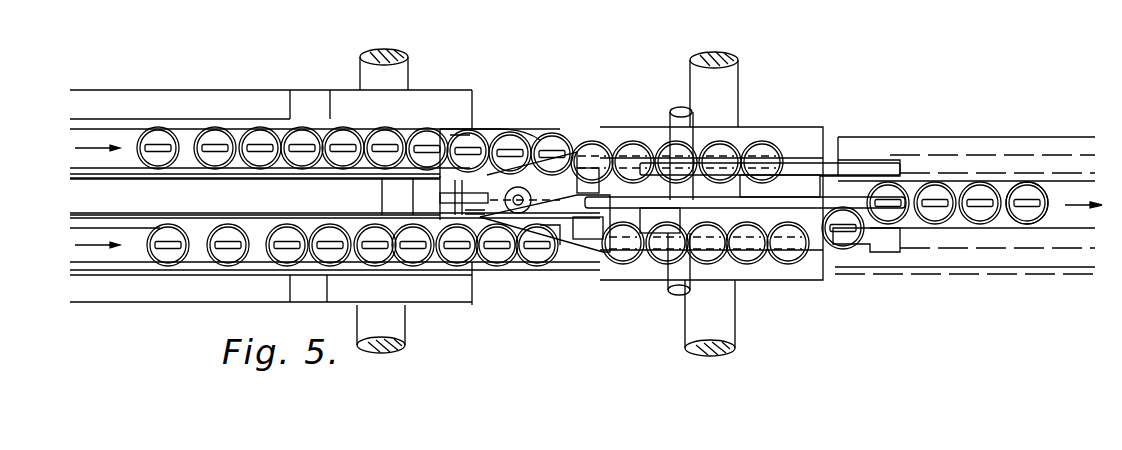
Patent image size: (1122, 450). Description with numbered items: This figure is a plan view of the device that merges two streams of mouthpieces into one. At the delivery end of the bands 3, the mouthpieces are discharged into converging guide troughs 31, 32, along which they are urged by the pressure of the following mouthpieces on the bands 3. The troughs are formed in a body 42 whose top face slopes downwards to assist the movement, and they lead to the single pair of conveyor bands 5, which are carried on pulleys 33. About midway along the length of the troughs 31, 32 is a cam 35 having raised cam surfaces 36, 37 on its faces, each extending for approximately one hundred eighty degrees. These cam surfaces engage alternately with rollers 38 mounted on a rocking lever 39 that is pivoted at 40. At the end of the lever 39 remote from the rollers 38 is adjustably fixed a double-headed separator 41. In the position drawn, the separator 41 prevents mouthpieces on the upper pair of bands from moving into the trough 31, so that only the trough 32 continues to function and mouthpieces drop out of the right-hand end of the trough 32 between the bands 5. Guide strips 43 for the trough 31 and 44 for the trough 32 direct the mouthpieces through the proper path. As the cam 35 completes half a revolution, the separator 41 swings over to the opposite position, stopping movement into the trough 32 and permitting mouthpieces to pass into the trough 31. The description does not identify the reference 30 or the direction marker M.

The bands 3 is at (126, 168).
The conveyor bands 5 is at (968, 182).
The guide plate 30 is at (468, 130).
The guide trough 31 is at (547, 176).
The guide trough 32 is at (532, 202).
The pulleys 33 is at (790, 188).
The cam 35 is at (752, 210).
The cam surface 36 is at (762, 180).
The cam surface 37 is at (655, 210).
The rollers 38 is at (585, 242).
The rocking lever 39 is at (548, 240).
The pivot 40 is at (520, 212).
The double-headed separator 41 is at (436, 178).
The body 42 is at (746, 128).
The guide strip 43 is at (868, 165).
The guide strip 44 is at (868, 237).
The direction of movement M is at (1028, 195).